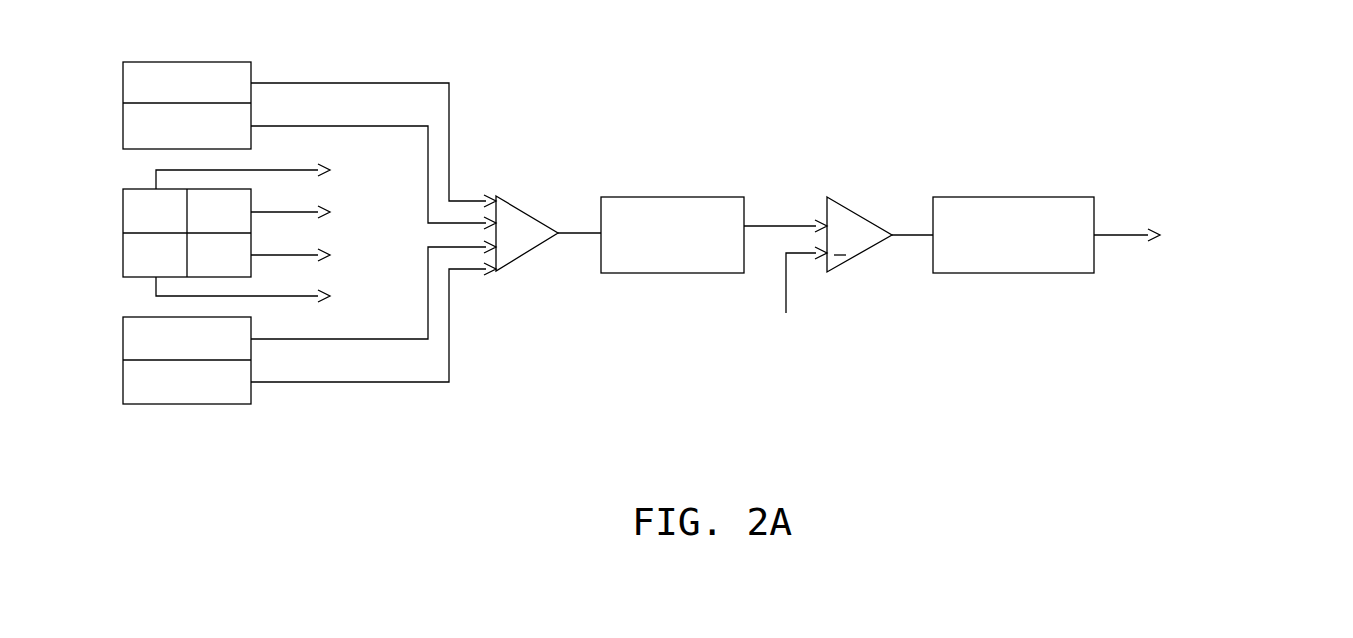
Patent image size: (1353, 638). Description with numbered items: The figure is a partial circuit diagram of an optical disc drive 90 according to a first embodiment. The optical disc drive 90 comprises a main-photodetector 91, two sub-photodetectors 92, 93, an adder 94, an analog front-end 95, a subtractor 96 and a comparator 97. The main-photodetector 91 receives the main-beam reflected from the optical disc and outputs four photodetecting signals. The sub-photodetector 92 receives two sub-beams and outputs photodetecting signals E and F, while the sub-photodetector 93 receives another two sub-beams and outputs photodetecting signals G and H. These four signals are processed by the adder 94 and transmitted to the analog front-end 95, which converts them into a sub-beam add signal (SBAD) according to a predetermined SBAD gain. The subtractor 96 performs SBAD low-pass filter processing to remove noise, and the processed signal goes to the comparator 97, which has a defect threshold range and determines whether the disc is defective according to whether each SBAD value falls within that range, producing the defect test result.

The optical disc drive 90 is at (1181, 64).
The main-photodetector 91 is at (123, 206).
The sub-photodetector 92 is at (123, 80).
The sub-photodetector 93 is at (123, 336).
The adder 94 is at (527, 212).
The analog front-end 95 is at (671, 197).
The subtractor 96 is at (861, 210).
The comparator 97 is at (1006, 197).